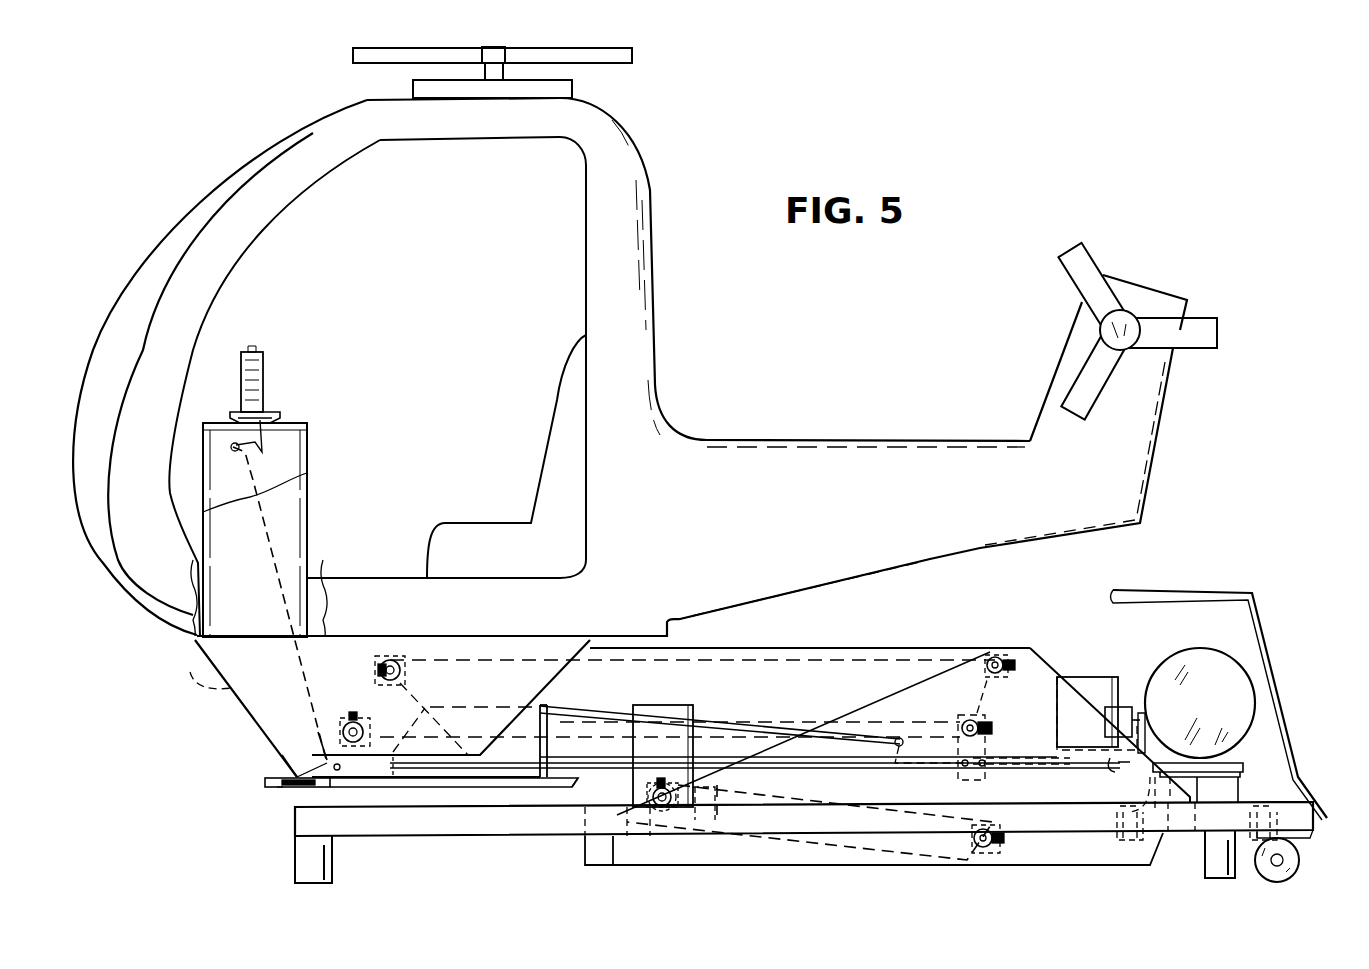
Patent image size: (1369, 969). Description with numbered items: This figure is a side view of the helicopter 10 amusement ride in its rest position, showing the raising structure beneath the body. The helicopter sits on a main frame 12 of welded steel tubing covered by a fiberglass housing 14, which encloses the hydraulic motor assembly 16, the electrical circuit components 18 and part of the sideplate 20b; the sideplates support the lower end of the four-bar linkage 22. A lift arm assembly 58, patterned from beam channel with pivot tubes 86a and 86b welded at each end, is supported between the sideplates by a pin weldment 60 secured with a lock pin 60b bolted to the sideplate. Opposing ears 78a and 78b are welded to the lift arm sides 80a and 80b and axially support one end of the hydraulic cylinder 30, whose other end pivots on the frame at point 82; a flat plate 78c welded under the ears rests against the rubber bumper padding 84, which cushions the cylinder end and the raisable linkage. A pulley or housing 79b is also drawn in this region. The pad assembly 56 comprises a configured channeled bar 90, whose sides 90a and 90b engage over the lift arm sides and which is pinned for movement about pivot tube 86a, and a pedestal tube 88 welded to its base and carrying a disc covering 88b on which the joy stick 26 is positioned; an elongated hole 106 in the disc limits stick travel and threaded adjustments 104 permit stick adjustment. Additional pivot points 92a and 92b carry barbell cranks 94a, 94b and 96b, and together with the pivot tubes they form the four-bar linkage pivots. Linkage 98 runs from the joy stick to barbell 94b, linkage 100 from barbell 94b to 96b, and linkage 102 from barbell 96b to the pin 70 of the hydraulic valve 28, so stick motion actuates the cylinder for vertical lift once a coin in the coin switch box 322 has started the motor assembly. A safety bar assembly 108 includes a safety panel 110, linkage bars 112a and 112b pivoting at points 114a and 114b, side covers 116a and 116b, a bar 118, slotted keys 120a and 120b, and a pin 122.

The helicopter 10 is at (1200, 514).
The main frame 12 is at (1312, 834).
The fiberglass housing 14 is at (1266, 646).
The hydraulic motor assembly 16 is at (1192, 648).
The electrical circuit components 18 is at (1093, 677).
The sideplate 20b is at (1040, 656).
The four-bar linkage 22 is at (635, 697).
The joy stick 26 is at (263, 368).
The hydraulic valve 28 is at (1126, 707).
The hydraulic cylinder 30 is at (876, 845).
The pad assembly 56 is at (330, 571).
The lift arm assembly 58 is at (712, 648).
The pin weldment 60 is at (998, 657).
The lock pin 60b is at (1011, 672).
The pin of the valve 70 is at (1116, 765).
The ear 78a is at (874, 849).
The ear 78b is at (636, 803).
The flat plate 78c is at (665, 816).
The pulley housing 79b is at (672, 788).
The lift arm side 80a is at (790, 648).
The lift arm side 80b is at (800, 697).
The pivot point 82 is at (985, 850).
The rubber bumper padding 84 is at (678, 818).
The pivot tube 86a is at (385, 660).
The pivot tube 86b is at (996, 674).
The pedestal tube 88 is at (308, 523).
The disc covering 88b is at (296, 427).
The configured channeled bar 90 is at (527, 621).
The side of channeled bar 90a is at (278, 677).
The side of channeled bar 90b is at (198, 674).
The pivot point 92a is at (350, 722).
The pivot point 92b is at (964, 722).
The barbell crank 94a is at (298, 768).
The barbell crank 94b is at (302, 765).
The barbell crank 96b is at (986, 748).
The linkage 98 is at (270, 562).
The linkage 100 is at (583, 769).
The linkage 102 is at (1025, 762).
The threaded adjustments 104 is at (320, 735).
The elongated hole 106 is at (258, 418).
The safety bar assembly 108 is at (425, 801).
The safety panel 110 is at (487, 781).
The linkage bar 112a is at (760, 731).
The linkage bar 112b is at (705, 726).
The pivot point 114a is at (895, 767).
The pivot point 114b is at (899, 738).
The side cover 116a is at (538, 710).
The side cover 116b is at (540, 759).
The bar 118 is at (576, 786).
The slotted key 120a is at (283, 778).
The slotted key 120b is at (290, 786).
The pin 122 is at (292, 786).
The coin switch box 322 is at (307, 494).